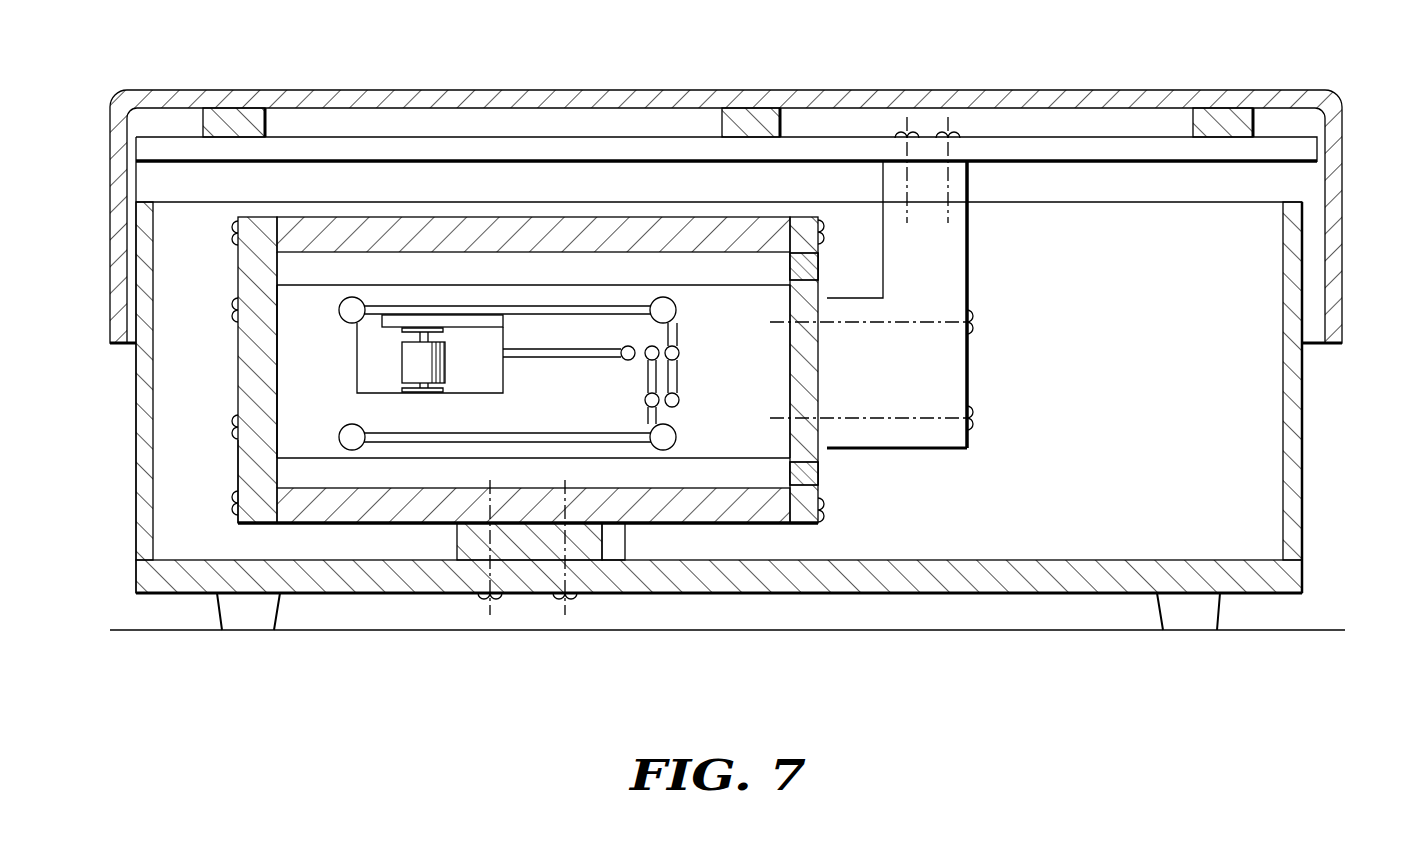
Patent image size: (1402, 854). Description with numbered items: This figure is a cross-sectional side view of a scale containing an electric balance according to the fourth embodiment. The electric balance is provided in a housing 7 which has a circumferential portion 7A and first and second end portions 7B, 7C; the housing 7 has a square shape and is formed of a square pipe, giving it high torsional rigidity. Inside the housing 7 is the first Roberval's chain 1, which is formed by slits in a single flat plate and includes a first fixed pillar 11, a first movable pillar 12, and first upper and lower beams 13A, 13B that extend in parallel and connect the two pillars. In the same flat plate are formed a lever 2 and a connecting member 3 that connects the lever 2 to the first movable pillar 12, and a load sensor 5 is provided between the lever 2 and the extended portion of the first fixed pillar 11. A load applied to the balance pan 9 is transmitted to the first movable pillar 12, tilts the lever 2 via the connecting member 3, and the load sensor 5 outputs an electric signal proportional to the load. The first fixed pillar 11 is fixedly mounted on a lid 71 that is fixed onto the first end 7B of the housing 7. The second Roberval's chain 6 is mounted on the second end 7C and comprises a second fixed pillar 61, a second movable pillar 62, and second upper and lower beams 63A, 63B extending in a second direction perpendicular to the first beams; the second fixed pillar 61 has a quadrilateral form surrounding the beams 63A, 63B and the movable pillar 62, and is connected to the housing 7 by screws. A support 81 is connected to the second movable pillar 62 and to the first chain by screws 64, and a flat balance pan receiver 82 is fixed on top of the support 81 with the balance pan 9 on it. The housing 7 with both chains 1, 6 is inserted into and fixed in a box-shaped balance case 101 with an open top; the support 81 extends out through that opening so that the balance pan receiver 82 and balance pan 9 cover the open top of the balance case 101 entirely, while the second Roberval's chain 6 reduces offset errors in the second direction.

The first Roberval's chain 1 is at (352, 270).
The lever 2 is at (540, 330).
The connecting member 3 is at (675, 378).
The load sensor 5 is at (440, 330).
The second Roberval's chain 6 is at (845, 228).
The housing 7 is at (627, 527).
The circumferential portion 7A is at (345, 507).
The first end portion 7B is at (268, 505).
The second end portion 7C is at (782, 523).
The balance pan 9 is at (1085, 100).
The first fixed pillar 11 is at (288, 395).
The first movable pillar 12 is at (712, 410).
The first upper beam 13A is at (598, 293).
The first lower beam 13B is at (527, 450).
The second fixed pillar 61 is at (830, 510).
The second movable pillar 62 is at (827, 370).
The second upper beam 63A is at (806, 262).
The second lower beam 63B is at (830, 468).
The screws 64 is at (985, 418).
The lid 71 is at (238, 348).
The support 81 is at (943, 268).
The balance pan receiver 82 is at (1170, 152).
The balance case 101 is at (1302, 485).